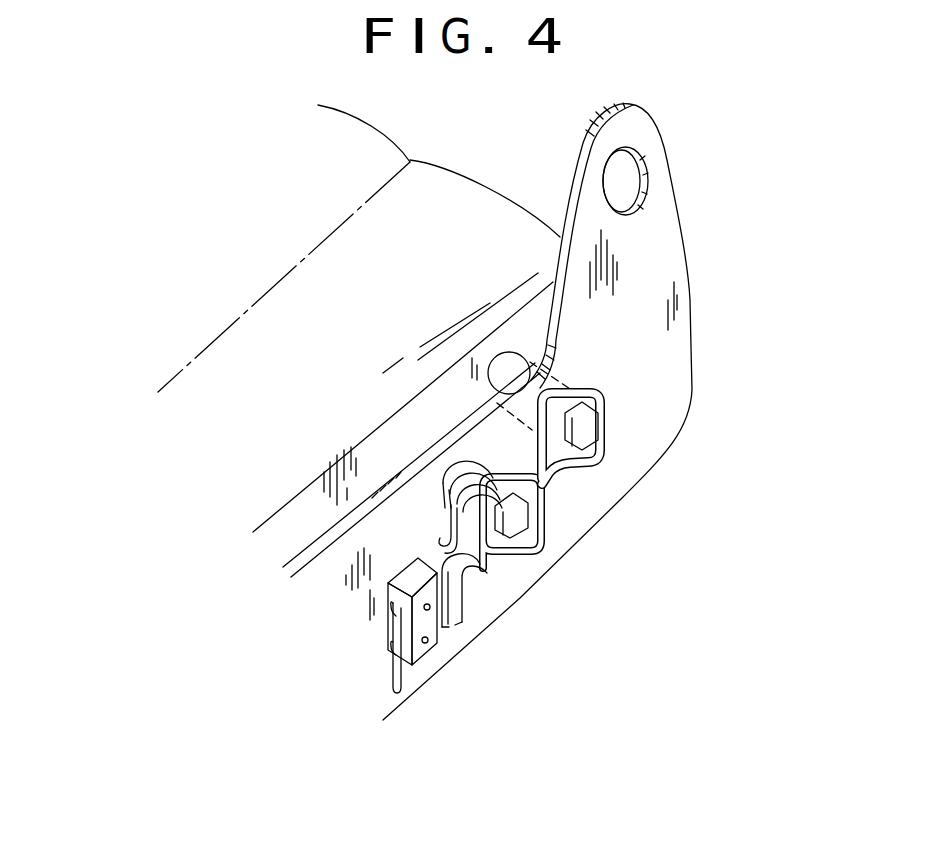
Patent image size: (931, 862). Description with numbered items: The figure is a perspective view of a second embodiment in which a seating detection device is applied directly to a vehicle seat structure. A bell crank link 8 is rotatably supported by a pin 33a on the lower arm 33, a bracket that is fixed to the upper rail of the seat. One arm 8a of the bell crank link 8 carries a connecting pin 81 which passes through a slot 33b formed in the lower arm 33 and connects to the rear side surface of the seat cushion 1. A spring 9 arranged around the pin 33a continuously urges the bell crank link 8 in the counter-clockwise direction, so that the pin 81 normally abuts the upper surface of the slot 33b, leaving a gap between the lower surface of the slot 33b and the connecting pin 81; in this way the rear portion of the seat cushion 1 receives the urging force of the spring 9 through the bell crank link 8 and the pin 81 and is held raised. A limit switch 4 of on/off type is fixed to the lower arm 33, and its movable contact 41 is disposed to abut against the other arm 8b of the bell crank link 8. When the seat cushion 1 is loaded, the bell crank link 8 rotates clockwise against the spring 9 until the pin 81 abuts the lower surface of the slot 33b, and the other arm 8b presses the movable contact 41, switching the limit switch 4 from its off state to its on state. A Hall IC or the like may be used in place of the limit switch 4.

The seat cushion 1 is at (458, 207).
The connecting pin 81 is at (510, 360).
The lower arm 33 is at (657, 392).
The pin 33a is at (514, 521).
The slot 33b is at (563, 385).
The bell crank link 8 is at (533, 557).
The one arm 8a is at (562, 470).
The other arm 8b is at (458, 592).
The spring 9 is at (452, 477).
The limit switch 4 is at (421, 653).
The movable contact 41 is at (446, 628).